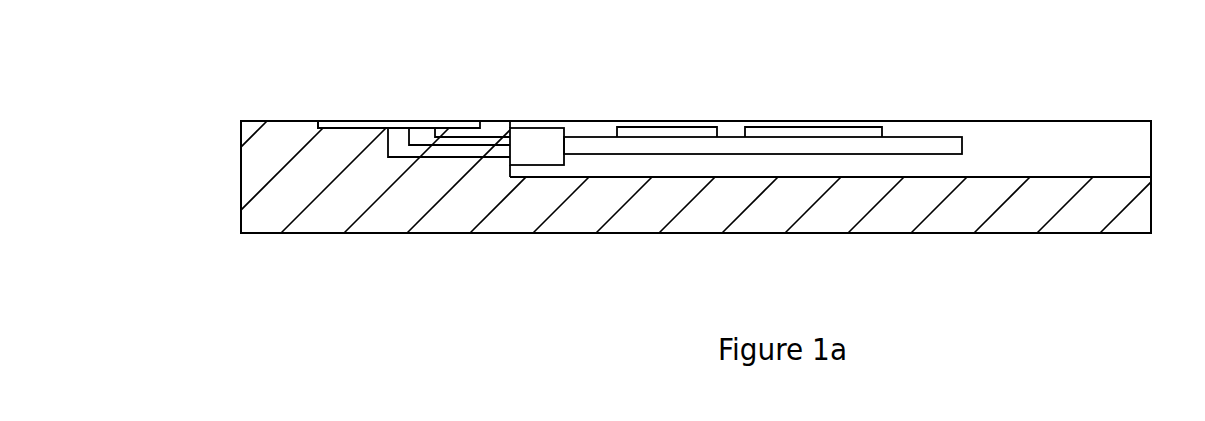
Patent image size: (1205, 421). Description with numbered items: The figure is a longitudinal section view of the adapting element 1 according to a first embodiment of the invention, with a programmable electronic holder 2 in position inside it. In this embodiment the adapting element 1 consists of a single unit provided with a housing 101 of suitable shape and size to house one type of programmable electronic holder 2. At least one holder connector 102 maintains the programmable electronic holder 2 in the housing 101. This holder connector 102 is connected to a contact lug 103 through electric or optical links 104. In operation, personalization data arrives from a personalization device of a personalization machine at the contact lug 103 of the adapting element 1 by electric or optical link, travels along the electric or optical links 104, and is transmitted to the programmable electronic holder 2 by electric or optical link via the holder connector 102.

The adapting element 1 is at (195, 189).
The programmable electronic holder 2 is at (723, 147).
The housing 101 is at (1058, 153).
The holder connector 102 is at (540, 146).
The contact lug 103 is at (398, 126).
The electric or optical links 104 is at (494, 128).